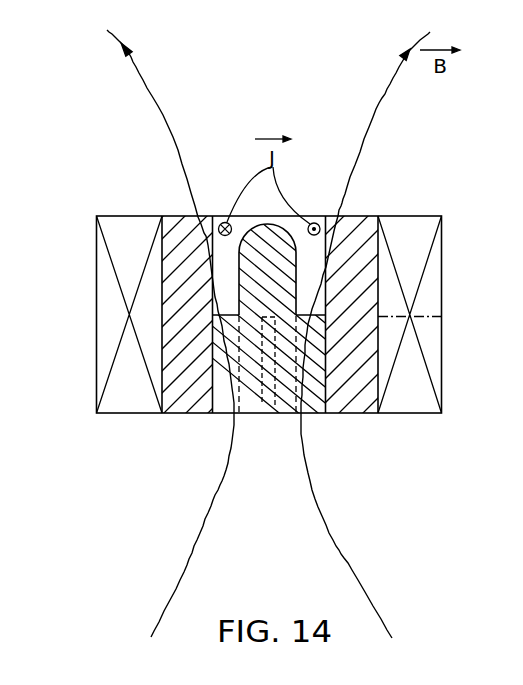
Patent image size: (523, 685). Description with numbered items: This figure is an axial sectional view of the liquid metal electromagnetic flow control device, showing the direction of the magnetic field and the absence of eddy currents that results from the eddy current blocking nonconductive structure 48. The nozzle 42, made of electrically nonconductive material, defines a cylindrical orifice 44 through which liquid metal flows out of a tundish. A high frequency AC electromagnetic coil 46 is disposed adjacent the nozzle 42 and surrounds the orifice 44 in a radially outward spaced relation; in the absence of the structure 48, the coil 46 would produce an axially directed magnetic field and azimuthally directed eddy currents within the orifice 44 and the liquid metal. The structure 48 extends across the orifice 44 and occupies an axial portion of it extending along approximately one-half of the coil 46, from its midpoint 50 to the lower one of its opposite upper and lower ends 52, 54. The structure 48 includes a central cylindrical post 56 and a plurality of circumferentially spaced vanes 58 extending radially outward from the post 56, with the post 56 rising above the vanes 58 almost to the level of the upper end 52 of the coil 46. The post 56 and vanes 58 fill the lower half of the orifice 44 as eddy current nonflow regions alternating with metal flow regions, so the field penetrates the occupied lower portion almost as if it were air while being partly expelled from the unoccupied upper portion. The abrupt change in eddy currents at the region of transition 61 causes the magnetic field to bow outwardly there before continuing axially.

The nozzle 42 is at (178, 417).
The cylindrical orifice 44 is at (297, 393).
The high frequency AC electromagnetic coil 46 is at (128, 417).
The eddy current blocking nonconductive structure 48 is at (255, 417).
The midpoint 50 is at (420, 313).
The upper end 52 is at (425, 216).
The lower end 54 is at (420, 415).
The central cylindrical post 56 is at (253, 267).
The vanes 58 is at (227, 393).
The region of transition 61 is at (213, 322).